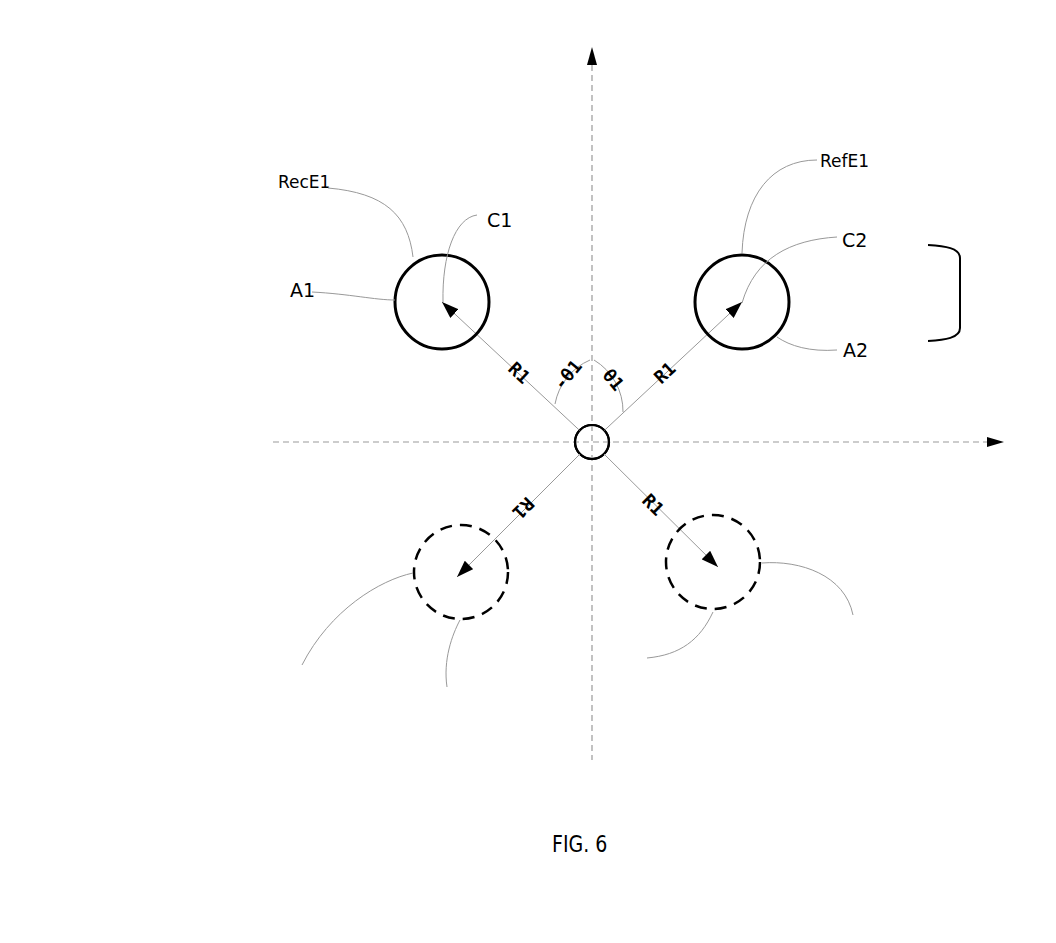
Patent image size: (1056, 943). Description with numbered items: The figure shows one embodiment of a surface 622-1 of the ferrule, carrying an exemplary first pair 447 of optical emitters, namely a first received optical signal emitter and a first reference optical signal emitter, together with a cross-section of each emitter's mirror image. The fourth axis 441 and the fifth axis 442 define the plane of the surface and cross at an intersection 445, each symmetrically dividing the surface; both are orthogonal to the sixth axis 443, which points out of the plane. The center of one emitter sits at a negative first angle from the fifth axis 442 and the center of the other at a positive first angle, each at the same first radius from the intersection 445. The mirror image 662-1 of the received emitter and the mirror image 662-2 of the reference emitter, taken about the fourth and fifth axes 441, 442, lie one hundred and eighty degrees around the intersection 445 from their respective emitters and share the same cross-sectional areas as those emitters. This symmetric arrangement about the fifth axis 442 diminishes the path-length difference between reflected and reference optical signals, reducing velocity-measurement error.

The fourth axis 441 is at (853, 443).
The fifth axis 442 is at (590, 197).
The sixth axis 443 is at (577, 445).
The intersection 445 is at (577, 427).
The first pair of optical emitters 447 is at (960, 292).
The surface of the ferrule 622-1 is at (648, 160).
The mirror image of the first received optical signal emitter 662-1 is at (747, 597).
The mirror image of the first reference optical signal emitter 662-2 is at (427, 537).